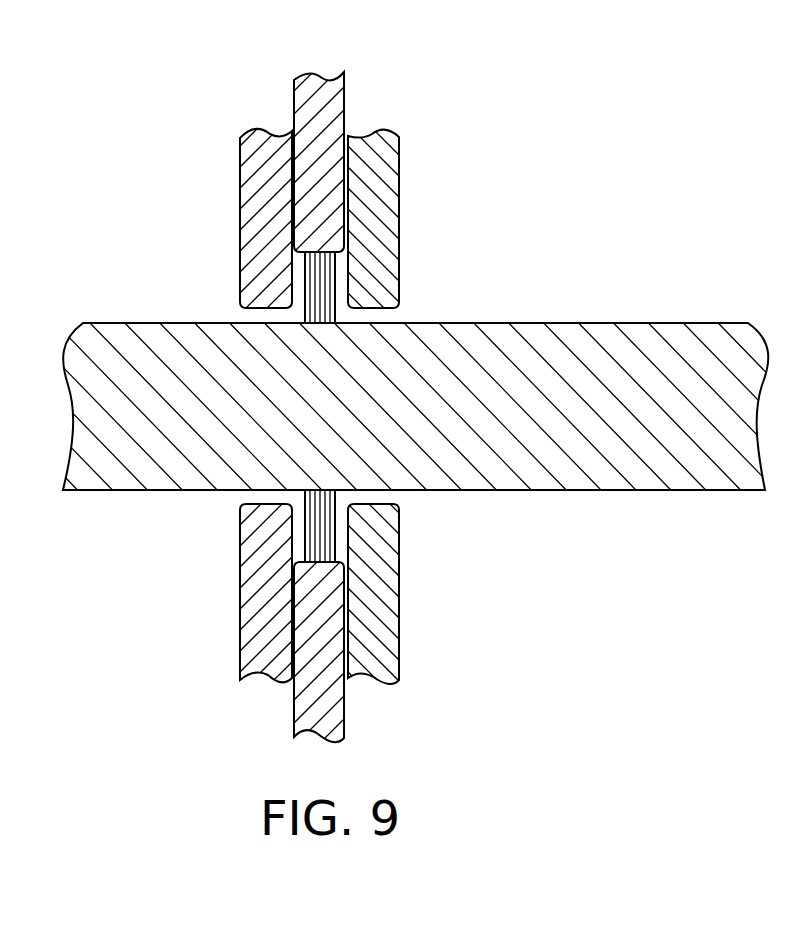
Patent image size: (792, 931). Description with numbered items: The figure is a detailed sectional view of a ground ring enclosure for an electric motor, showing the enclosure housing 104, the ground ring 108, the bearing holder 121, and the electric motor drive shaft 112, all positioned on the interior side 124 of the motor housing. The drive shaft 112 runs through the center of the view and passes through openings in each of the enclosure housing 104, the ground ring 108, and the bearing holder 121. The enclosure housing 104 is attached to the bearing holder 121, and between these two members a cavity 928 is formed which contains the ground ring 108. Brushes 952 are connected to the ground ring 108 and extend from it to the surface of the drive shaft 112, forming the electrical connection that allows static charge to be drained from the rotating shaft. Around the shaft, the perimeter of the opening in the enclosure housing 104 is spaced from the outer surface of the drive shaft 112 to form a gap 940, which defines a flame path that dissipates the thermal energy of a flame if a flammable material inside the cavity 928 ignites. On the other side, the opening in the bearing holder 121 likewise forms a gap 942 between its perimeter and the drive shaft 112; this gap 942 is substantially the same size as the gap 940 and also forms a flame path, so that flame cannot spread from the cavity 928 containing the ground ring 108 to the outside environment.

The enclosure housing 104 is at (247, 214).
The ground ring 108 is at (295, 120).
The electric motor drive shaft 112 is at (612, 492).
The bearing holder 121 is at (400, 228).
The interior side 124 is at (60, 578).
The cavity 928 is at (302, 533).
The gap 940 is at (242, 318).
The gap 942 is at (385, 319).
The brushes 952 is at (335, 290).